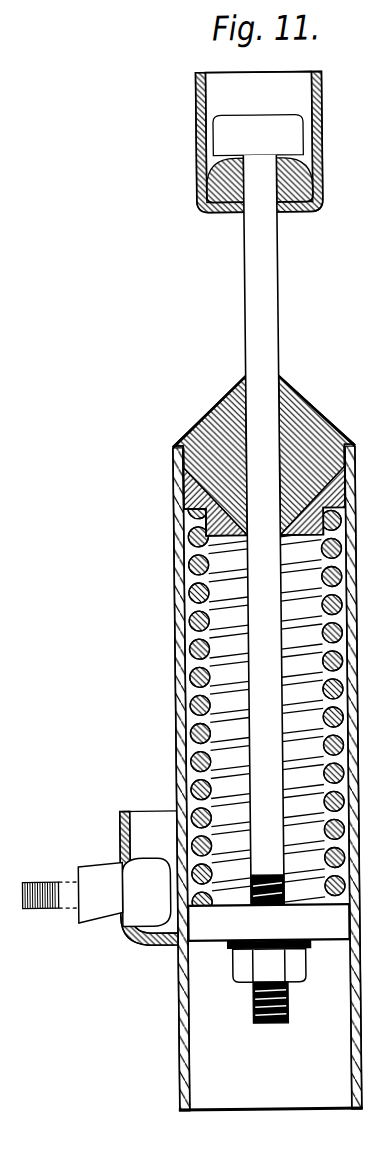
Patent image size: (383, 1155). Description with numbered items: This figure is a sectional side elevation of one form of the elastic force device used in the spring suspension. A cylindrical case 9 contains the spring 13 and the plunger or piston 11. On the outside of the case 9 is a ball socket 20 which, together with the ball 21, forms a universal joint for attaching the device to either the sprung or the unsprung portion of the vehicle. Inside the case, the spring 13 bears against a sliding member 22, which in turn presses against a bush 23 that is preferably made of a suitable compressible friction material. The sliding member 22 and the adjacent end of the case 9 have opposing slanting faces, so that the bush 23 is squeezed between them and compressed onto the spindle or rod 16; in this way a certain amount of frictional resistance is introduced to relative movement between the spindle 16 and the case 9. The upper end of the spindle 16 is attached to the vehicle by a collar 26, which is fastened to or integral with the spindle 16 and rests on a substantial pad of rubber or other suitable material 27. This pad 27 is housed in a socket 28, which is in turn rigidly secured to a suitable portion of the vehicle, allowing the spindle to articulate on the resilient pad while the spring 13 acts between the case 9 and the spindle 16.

The cylindrical case 9 is at (178, 572).
The plunger or piston 11 is at (235, 920).
The spring 13 is at (222, 650).
The spindle or rod 16 is at (261, 312).
The ball socket 20 is at (155, 820).
The ball 21 is at (145, 886).
The sliding member 22 is at (208, 500).
The bush 23 is at (212, 418).
The collar 26 is at (263, 133).
The pad of rubber 27 is at (217, 184).
The socket 28 is at (326, 185).